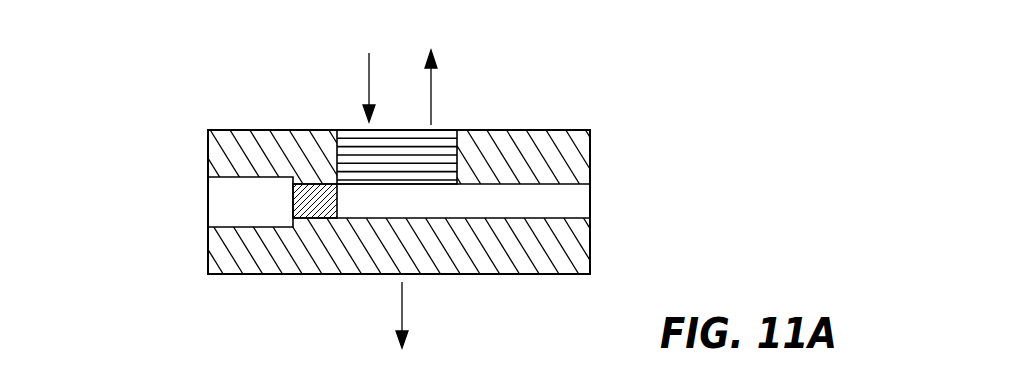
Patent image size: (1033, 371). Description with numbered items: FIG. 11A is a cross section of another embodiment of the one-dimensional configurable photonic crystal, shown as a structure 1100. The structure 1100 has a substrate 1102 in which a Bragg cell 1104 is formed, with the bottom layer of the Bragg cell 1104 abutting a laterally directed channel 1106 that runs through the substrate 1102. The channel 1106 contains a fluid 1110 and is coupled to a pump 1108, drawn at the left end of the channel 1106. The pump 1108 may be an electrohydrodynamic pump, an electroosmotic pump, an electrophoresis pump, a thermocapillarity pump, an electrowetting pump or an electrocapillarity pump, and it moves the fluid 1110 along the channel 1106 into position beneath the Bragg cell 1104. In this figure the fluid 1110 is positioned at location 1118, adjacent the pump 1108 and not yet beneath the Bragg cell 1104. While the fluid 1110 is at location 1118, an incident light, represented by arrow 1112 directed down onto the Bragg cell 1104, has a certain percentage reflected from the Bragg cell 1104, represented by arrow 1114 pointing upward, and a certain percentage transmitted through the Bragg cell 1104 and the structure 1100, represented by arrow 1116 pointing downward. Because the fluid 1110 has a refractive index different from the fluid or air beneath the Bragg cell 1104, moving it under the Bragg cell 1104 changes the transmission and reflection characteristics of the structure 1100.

The structure 1100 is at (597, 92).
The substrate 1102 is at (583, 148).
The Bragg cell 1104 is at (443, 129).
The channel 1106 is at (583, 202).
The pump 1108 is at (218, 202).
The fluid 1110 is at (307, 195).
The incident light 1112 is at (369, 86).
The reflected light 1114 is at (431, 83).
The transmitted light 1116 is at (402, 308).
The location 1118 is at (343, 198).